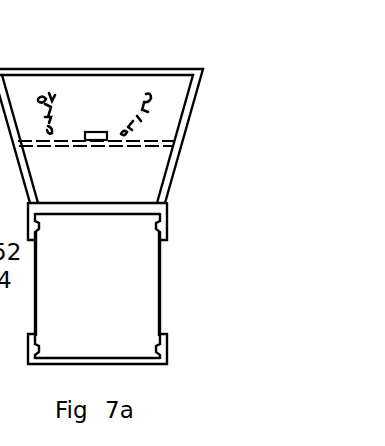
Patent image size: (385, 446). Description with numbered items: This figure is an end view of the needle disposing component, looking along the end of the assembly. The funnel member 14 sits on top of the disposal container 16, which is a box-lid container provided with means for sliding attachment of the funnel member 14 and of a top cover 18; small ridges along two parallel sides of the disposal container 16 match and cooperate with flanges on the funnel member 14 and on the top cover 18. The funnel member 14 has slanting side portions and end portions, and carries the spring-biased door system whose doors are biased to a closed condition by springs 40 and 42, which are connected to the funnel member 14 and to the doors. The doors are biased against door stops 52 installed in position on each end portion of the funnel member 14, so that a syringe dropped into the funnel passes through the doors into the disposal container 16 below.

The funnel member 14 is at (140, 67).
The disposal container 16 is at (161, 305).
The top cover 18 is at (171, 364).
The spring 40 is at (52, 103).
The spring 42 is at (163, 113).
The door stop 52 is at (135, 158).